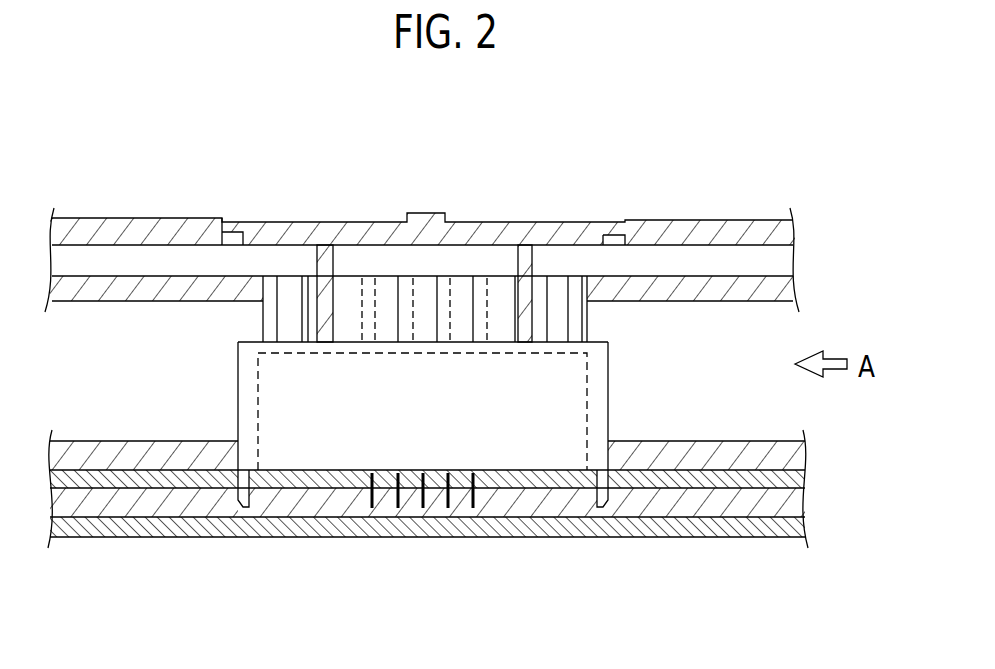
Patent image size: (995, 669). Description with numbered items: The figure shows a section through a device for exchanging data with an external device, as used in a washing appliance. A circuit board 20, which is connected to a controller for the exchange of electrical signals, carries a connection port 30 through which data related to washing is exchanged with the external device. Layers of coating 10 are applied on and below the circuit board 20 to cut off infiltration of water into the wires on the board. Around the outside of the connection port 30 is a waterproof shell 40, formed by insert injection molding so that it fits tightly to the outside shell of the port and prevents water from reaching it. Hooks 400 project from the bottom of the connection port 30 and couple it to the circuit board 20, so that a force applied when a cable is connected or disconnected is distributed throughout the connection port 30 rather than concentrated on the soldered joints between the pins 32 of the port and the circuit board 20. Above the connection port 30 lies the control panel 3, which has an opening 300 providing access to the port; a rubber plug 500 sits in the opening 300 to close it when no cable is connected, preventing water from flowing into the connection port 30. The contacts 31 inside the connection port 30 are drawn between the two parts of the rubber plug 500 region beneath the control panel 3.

The control panel 3 is at (121, 228).
The contacts 31 is at (370, 286).
The rubber plug 500 is at (517, 238).
The opening 300 is at (613, 232).
The waterproof shell 40 is at (247, 388).
The connection port 30 is at (430, 451).
The layers of coating 10 is at (173, 500).
The circuit board 20 is at (428, 535).
The pins 32 is at (412, 517).
The hooks 400 is at (597, 503).